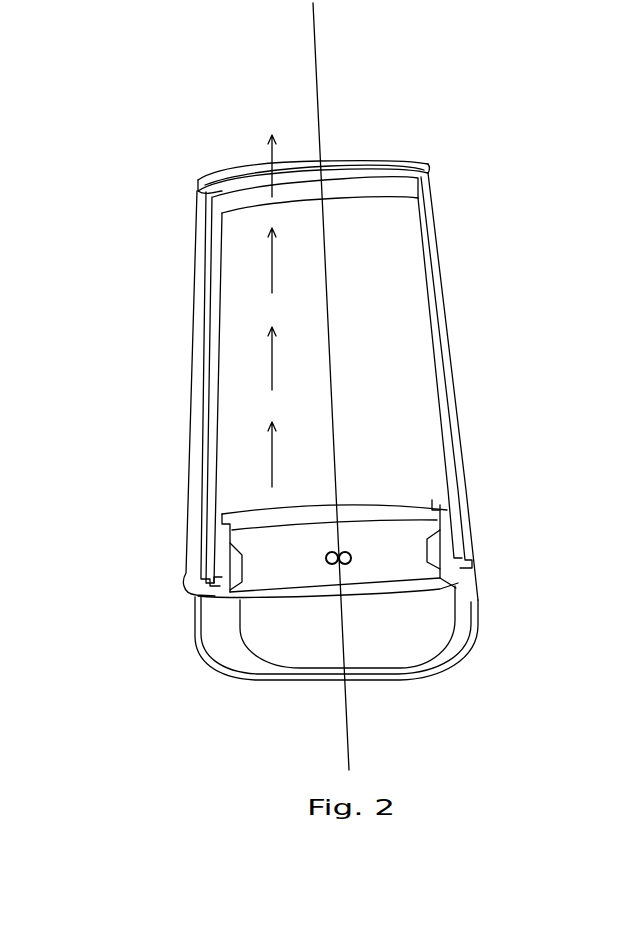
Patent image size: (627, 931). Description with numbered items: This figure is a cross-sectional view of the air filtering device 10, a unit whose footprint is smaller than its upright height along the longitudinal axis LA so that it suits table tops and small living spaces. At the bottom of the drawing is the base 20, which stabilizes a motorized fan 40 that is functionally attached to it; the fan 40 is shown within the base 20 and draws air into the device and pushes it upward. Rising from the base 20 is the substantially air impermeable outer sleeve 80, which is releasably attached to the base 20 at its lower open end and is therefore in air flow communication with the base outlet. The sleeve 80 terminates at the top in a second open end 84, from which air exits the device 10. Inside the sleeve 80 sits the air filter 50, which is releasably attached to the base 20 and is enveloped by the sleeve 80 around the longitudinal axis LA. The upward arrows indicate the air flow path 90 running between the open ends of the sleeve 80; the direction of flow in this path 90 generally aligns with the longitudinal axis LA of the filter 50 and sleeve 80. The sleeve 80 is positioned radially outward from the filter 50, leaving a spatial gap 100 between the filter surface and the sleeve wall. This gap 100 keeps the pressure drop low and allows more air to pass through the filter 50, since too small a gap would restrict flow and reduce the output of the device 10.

The device 10 is at (175, 213).
The base 20 is at (493, 665).
The fan 40 is at (327, 557).
The air filter 50 is at (402, 196).
The outer sleeve 80 is at (450, 350).
The second open end 84 is at (347, 150).
The air flow path 90 is at (272, 362).
The spatial gap 100 is at (423, 247).
The longitudinal axis LA is at (316, 84).